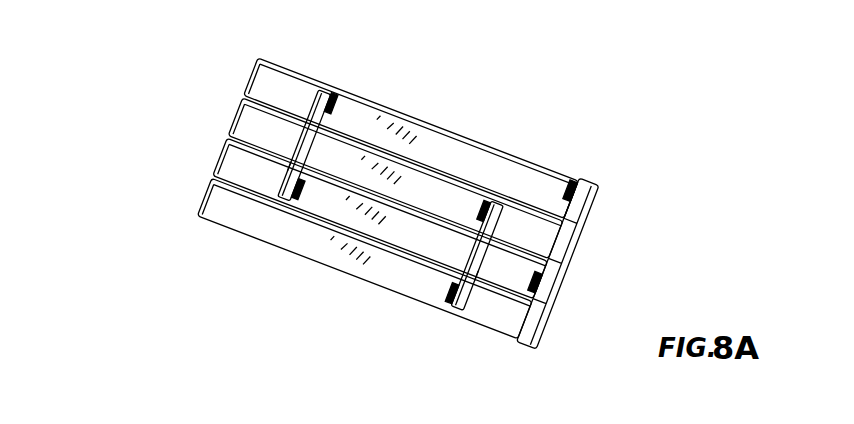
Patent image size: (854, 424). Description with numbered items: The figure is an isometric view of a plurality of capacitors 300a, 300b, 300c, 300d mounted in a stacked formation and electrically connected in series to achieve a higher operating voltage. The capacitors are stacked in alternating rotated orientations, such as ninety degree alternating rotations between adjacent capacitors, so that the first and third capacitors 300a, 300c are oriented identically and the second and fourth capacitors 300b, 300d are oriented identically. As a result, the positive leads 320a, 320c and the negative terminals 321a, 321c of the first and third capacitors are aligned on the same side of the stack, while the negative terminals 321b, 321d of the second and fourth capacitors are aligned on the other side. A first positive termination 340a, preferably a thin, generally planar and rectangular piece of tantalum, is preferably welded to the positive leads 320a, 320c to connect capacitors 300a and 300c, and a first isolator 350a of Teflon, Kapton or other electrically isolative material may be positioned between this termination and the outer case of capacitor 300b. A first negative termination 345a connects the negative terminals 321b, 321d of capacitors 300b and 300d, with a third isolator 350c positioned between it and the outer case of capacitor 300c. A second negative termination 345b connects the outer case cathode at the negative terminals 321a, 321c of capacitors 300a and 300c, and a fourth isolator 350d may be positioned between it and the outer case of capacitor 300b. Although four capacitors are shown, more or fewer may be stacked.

The first capacitor 300a is at (247, 63).
The second capacitor 300b is at (237, 112).
The third capacitor 300c is at (222, 153).
The fourth capacitor 300d is at (202, 202).
The first positive termination 340a is at (595, 188).
The first negative termination 345a is at (470, 308).
The second negative termination 345b is at (323, 77).
The positive lead 320a is at (568, 192).
The positive lead 320c is at (538, 300).
The negative terminal 321a is at (337, 108).
The negative terminal 321b is at (475, 205).
The negative terminal 321c is at (298, 195).
The negative terminal 321d is at (452, 298).
The first isolator 350a is at (548, 190).
The third isolator 350c is at (472, 262).
The fourth isolator 350d is at (300, 160).